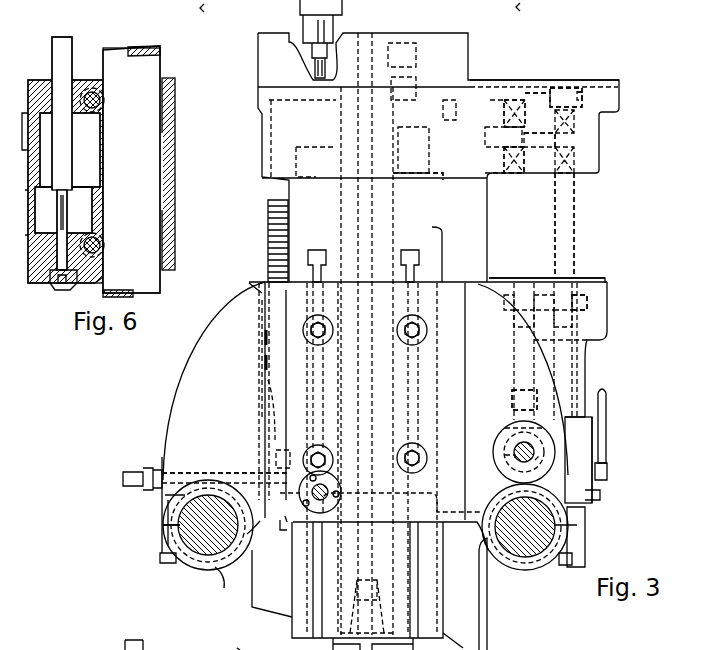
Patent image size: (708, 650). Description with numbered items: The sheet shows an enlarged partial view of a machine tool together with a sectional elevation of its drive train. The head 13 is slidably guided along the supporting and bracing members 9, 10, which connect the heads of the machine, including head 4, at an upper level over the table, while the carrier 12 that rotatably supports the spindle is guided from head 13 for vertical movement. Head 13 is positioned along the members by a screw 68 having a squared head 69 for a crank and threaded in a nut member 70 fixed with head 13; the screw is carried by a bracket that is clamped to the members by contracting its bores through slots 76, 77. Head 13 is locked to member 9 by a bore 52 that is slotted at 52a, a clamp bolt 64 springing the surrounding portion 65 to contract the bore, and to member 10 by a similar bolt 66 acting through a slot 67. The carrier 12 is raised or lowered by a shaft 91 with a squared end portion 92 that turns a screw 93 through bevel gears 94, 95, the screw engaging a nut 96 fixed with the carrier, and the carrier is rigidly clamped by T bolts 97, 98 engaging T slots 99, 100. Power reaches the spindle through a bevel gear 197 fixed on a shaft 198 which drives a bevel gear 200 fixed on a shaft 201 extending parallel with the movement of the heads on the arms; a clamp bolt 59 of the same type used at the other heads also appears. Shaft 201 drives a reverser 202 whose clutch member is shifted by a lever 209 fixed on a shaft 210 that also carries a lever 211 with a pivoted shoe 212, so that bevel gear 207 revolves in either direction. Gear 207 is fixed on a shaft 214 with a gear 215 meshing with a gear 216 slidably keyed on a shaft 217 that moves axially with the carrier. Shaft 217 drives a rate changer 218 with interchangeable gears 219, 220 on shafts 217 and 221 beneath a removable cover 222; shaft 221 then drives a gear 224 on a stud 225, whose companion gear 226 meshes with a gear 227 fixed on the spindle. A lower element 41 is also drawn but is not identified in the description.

In FIG. 3, the head or support 4 is at (487, 590).
In FIG. 3, the supporting and bracing member 9 is at (208, 556).
In FIG. 6, the supporting and bracing member 10 is at (161, 62).
In FIG. 3, the supporting and bracing member 10 is at (530, 553).
In FIG. 3, the carrier or support 12 is at (443, 253).
In FIG. 3, the head or support 13 is at (218, 323).
In FIG. 3, the bottom plate 41 is at (400, 640).
In FIG. 3, the bore 52 is at (190, 548).
In FIG. 3, the slot 52a is at (166, 526).
In FIG. 6, the clamp bolt 59 is at (104, 100).
In FIG. 3, the clamp bolt 64 is at (162, 564).
In FIG. 3, the portion of metal surrounding the bore 65 is at (224, 588).
In FIG. 3, the bolt 66 is at (566, 566).
In FIG. 3, the slot 67 is at (578, 528).
In FIG. 3, the screw 68 is at (328, 488).
In FIG. 3, the squared head 69 is at (312, 62).
In FIG. 3, the nut member 70 is at (330, 452).
In FIG. 3, the slot 76 is at (212, 9).
In FIG. 3, the slot 77 is at (528, 8).
In FIG. 3, the shaft 91 is at (228, 472).
In FIG. 3, the end portion 92 is at (124, 472).
In FIG. 3, the screw 93 is at (270, 213).
In FIG. 3, the bevel gear 94 is at (276, 462).
In FIG. 3, the bevel gear 95 is at (289, 524).
In FIG. 3, the nut 96 is at (265, 373).
In FIG. 3, the T bolt 97 is at (322, 340).
In FIG. 3, the T bolt 98 is at (418, 338).
In FIG. 3, the T slot 99 is at (322, 270).
In FIG. 3, the T slot 100 is at (416, 270).
In FIG. 3, the bevel gear 197 is at (151, 644).
In FIG. 3, the shaft 198 is at (251, 644).
In FIG. 6, the bevel gear 200 is at (34, 208).
In FIG. 6, the shaft 201 is at (60, 38).
In FIG. 3, the shaft 201 is at (505, 440).
In FIG. 3, the reverser 202 is at (512, 452).
In FIG. 3, the bevel gear 207 is at (510, 424).
In FIG. 3, the lever 209 is at (607, 435).
In FIG. 3, the shaft 210 is at (608, 472).
In FIG. 3, the lever 211 is at (596, 492).
In FIG. 3, the pivoted shoe 212 is at (560, 430).
In FIG. 3, the shaft 214 is at (516, 368).
In FIG. 3, the gear 215 is at (500, 298).
In FIG. 3, the gear 216 is at (588, 302).
In FIG. 3, the shaft 217 is at (576, 214).
In FIG. 3, the rate changer 218 is at (558, 87).
In FIG. 3, the gear 219 is at (583, 92).
In FIG. 3, the gear 220 is at (536, 92).
In FIG. 3, the shaft 221 is at (518, 166).
In FIG. 3, the cover 222 is at (508, 80).
In FIG. 3, the gear 224 is at (504, 118).
In FIG. 3, the stud 225 is at (448, 187).
In FIG. 3, the gear 226 is at (506, 163).
In FIG. 3, the gear 227 is at (414, 175).